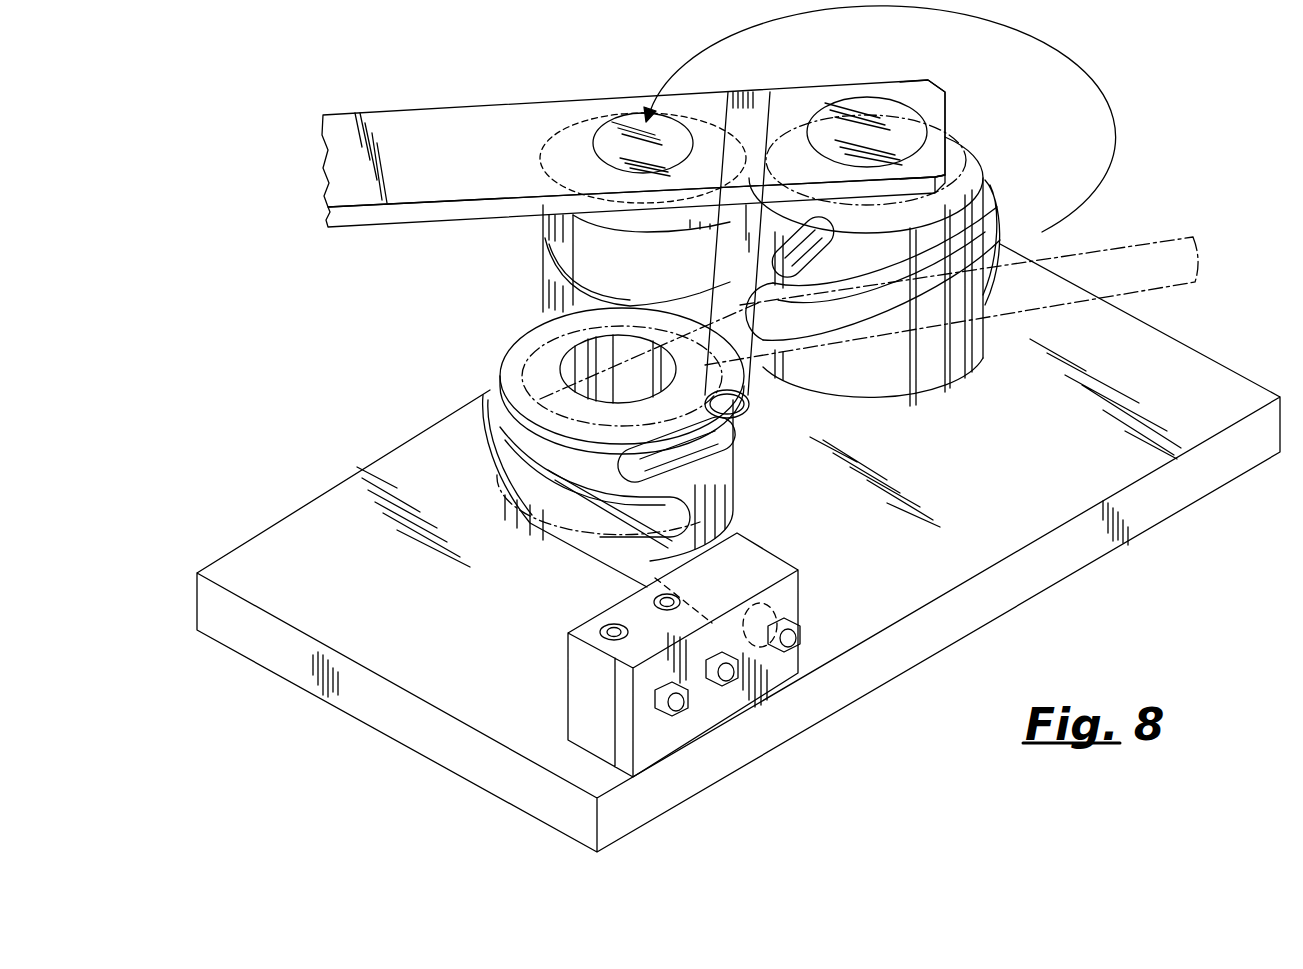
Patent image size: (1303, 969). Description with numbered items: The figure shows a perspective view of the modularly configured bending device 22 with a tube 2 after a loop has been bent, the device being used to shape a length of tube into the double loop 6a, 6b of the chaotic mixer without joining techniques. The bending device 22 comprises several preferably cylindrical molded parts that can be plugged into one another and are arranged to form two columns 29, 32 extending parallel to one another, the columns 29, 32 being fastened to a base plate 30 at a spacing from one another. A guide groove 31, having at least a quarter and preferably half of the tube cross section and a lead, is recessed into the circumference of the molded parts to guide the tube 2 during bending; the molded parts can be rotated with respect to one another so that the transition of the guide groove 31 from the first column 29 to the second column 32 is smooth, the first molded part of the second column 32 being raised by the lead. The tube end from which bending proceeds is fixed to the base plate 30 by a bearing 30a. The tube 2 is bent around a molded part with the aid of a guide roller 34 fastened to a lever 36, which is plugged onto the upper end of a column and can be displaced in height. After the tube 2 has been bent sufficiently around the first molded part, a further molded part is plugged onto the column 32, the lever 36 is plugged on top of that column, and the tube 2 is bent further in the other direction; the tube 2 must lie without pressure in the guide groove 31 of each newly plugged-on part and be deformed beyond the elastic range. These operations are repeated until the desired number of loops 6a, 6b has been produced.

The tube 2 is at (1152, 240).
The loop 6a is at (482, 424).
The loop 6b is at (1003, 208).
The bending device 22 is at (340, 335).
The column 29 is at (488, 352).
The base plate 30 is at (1223, 382).
The bearing 30a is at (717, 712).
The guide groove 31 is at (807, 262).
The column 32 is at (972, 105).
The guide roller 34 is at (553, 292).
The lever 36 is at (452, 116).